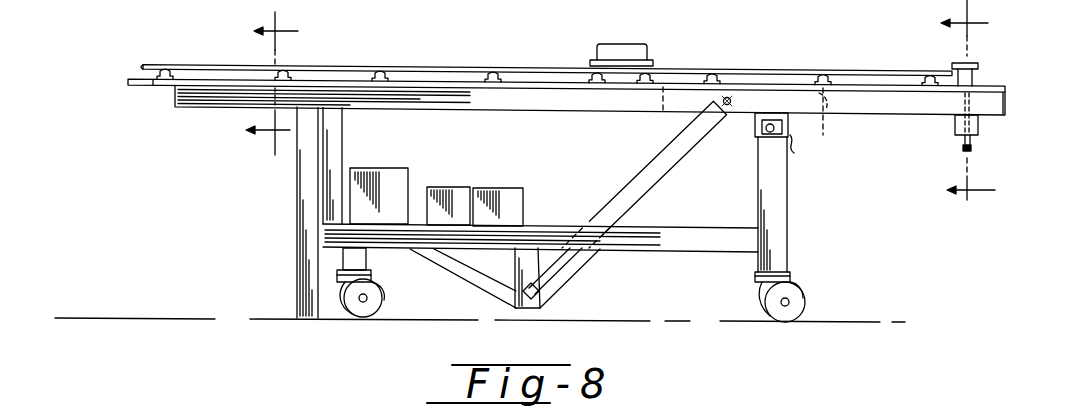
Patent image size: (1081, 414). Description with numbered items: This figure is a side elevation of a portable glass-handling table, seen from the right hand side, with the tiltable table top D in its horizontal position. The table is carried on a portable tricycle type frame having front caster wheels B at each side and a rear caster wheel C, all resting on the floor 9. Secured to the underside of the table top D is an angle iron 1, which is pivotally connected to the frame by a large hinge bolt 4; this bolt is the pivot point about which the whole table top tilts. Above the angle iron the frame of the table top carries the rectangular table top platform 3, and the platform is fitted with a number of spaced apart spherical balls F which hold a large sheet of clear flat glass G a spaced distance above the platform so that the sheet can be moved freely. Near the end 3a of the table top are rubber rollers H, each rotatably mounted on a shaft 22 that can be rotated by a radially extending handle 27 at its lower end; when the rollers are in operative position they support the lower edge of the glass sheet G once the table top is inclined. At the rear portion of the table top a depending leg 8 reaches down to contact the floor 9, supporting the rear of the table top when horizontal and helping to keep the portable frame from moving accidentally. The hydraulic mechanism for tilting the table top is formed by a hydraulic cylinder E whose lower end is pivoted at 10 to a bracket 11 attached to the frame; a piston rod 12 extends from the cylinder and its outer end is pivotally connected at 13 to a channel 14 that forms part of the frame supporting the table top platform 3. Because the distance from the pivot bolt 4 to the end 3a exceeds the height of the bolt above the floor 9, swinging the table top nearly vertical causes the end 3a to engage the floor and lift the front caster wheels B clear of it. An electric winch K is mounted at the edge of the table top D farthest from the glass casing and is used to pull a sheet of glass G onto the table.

The angle iron 1 is at (796, 148).
The table top platform 3 is at (128, 80).
The end of table top 3a is at (1006, 104).
The bolt 4 is at (757, 141).
The depending leg 8 is at (297, 170).
The floor 9 is at (238, 316).
The pivot 10 is at (515, 305).
The bracket 11 is at (515, 262).
The piston rod 12 is at (843, 101).
The pivotal connection 13 is at (767, 64).
The channel 14 is at (542, 83).
The shaft 22 is at (964, 100).
The handle 27 is at (972, 150).
The front caster wheel B is at (805, 297).
The rear caster wheel C is at (388, 292).
The tiltable table top D is at (494, 115).
The hydraulic cylinder E is at (628, 178).
The spherical ball F is at (297, 72).
The glass sheet G is at (445, 63).
The rubber roller H is at (980, 60).
The electric winch K is at (642, 41).